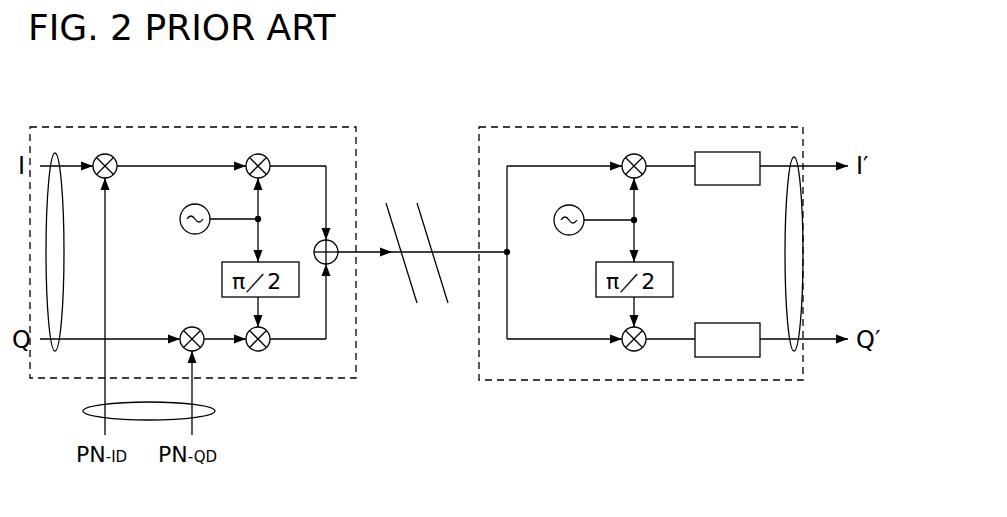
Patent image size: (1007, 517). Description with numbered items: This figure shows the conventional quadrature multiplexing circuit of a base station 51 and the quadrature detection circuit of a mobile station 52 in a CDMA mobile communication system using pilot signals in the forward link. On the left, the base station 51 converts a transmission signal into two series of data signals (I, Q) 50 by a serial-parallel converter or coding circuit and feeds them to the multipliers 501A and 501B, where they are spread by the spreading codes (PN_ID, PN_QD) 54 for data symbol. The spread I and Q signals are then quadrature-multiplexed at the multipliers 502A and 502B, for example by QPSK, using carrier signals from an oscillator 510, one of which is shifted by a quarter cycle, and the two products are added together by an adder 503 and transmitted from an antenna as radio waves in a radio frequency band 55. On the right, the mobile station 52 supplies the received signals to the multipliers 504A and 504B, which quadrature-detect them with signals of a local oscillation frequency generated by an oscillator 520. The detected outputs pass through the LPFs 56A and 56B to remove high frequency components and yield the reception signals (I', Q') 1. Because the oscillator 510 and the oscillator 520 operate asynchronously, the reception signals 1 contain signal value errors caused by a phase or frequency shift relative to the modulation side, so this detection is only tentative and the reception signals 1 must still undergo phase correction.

The reception signals (I', Q') 1 is at (795, 158).
The data signals (I, Q) 50 is at (55, 153).
The base station 51 is at (218, 128).
The mobile station 52 is at (497, 128).
The spreading codes (PN_ID, PN_QD) 54 is at (215, 411).
The radio frequency band 55 is at (407, 197).
The multiplier 501A is at (110, 156).
The multiplier 501B is at (191, 327).
The multiplier 502A is at (267, 157).
The multiplier 502B is at (268, 349).
The adder 503 is at (336, 262).
The oscillator 510 is at (182, 228).
The multiplier 504A is at (634, 154).
The multiplier 504B is at (628, 351).
The oscillator 520 is at (563, 234).
The LPF (low pass filter) 56A is at (722, 152).
The LPF (low pass filter) 56B is at (740, 357).